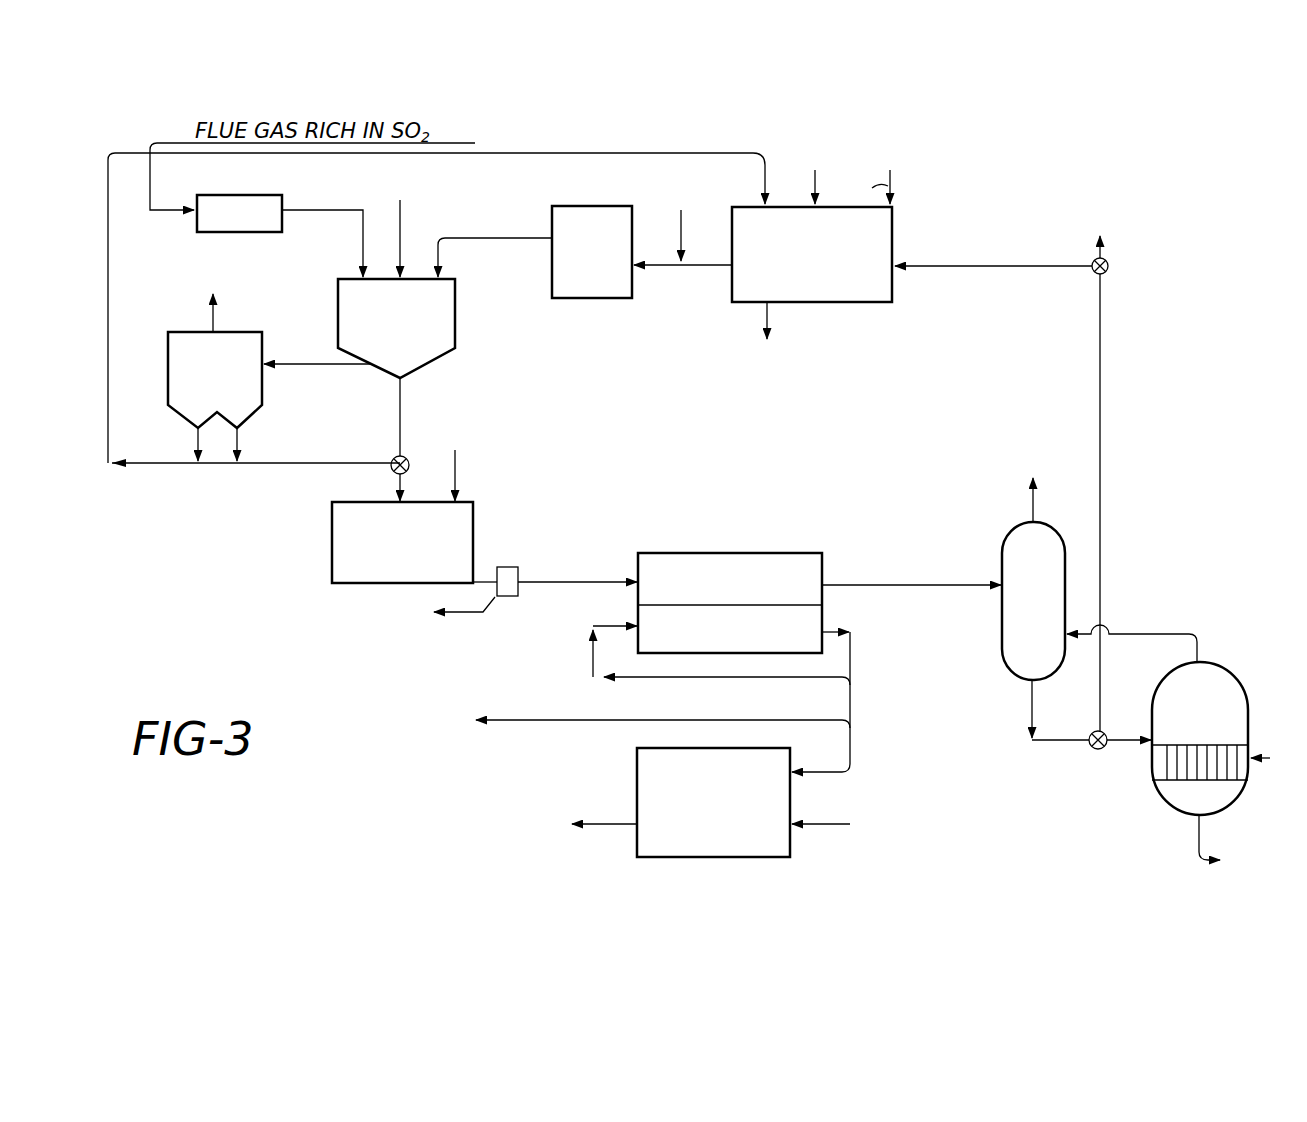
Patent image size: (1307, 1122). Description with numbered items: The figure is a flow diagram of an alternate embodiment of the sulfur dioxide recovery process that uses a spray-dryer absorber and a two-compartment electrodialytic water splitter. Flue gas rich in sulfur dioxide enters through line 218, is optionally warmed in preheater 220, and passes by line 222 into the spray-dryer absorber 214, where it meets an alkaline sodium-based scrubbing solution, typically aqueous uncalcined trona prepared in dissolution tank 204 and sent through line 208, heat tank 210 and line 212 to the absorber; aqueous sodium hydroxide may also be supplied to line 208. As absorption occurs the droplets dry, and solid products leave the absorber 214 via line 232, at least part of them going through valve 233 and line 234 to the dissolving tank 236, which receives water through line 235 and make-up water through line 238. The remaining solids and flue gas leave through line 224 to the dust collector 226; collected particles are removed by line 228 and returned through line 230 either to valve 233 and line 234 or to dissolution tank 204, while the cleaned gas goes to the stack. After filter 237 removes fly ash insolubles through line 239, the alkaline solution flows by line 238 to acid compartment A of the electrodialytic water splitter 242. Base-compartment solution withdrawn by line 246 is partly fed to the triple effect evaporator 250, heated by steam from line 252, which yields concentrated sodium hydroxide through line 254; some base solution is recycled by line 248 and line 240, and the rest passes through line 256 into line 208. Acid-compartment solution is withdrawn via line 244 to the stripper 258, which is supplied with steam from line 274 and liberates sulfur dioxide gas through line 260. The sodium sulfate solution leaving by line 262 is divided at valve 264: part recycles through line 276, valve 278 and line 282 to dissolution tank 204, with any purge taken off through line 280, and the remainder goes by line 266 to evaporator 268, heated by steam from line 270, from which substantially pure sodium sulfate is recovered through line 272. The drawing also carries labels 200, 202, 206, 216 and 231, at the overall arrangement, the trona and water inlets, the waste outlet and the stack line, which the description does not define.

The dissolver 200 is at (895, 180).
The trona feed 202 is at (818, 180).
The dissolution tank 204 is at (895, 214).
The waste outlet 206 is at (768, 316).
The line 208 is at (712, 266).
The heat tank 210 is at (585, 298).
The line 212 is at (508, 212).
The spray-dryer absorber 214 is at (458, 320).
The water line to spray dryer absorber 216 is at (404, 215).
The line 218 is at (172, 212).
The preheater 220 is at (270, 233).
The line 222 is at (360, 245).
The line 224 is at (362, 364).
The dust collector 226 is at (168, 388).
The line 228 is at (195, 452).
The line 230 is at (735, 152).
The flue gas to stack outlet 231 is at (215, 312).
The line 232 is at (404, 402).
The valve 233 is at (412, 455).
The line 234 is at (398, 482).
The line 235 is at (458, 466).
The dissolving tank 236 is at (332, 548).
The filter 237 is at (508, 567).
The line 238 is at (598, 556).
The line 239 is at (483, 616).
The line 240 is at (575, 632).
The two-compartment electrodialytic water splitter 242 is at (748, 553).
The line 244 is at (917, 585).
The line 246 is at (850, 710).
The line 248 is at (740, 678).
The triple effect evaporator 250 is at (735, 857).
The line 252 is at (842, 824).
The line 254 is at (598, 824).
The line 256 is at (683, 230).
The stripper 258 is at (1002, 642).
The line 260 is at (1033, 506).
The line 262 is at (1032, 706).
The valve 264 is at (1102, 748).
The line 266 is at (1118, 738).
The evaporator 268 is at (1230, 668).
The line 270 is at (1270, 765).
The line 272 is at (1210, 862).
The line 274 is at (1158, 634).
The line 276 is at (1102, 464).
The valve 278 is at (1108, 272).
The line 280 is at (1103, 244).
The line 282 is at (998, 237).